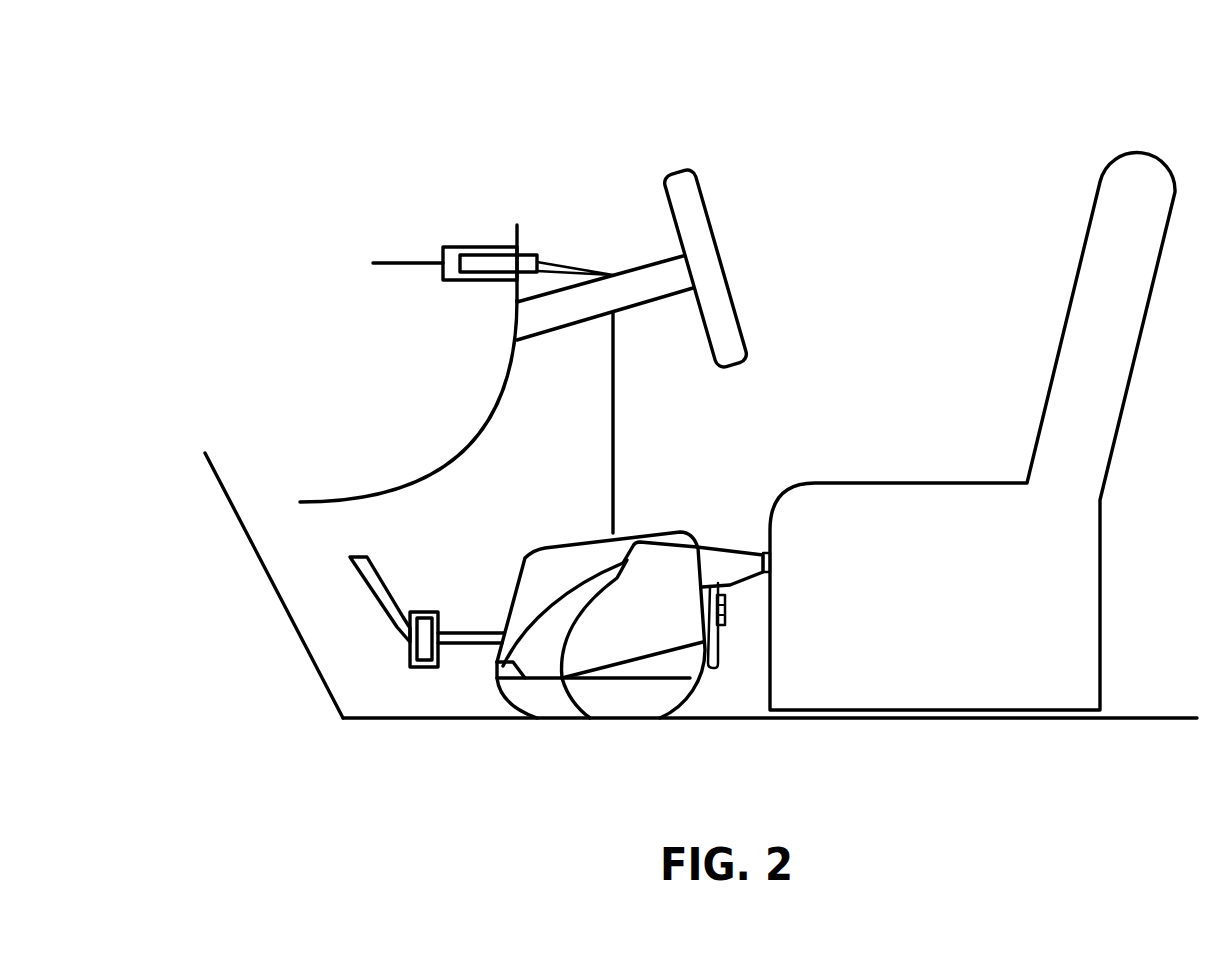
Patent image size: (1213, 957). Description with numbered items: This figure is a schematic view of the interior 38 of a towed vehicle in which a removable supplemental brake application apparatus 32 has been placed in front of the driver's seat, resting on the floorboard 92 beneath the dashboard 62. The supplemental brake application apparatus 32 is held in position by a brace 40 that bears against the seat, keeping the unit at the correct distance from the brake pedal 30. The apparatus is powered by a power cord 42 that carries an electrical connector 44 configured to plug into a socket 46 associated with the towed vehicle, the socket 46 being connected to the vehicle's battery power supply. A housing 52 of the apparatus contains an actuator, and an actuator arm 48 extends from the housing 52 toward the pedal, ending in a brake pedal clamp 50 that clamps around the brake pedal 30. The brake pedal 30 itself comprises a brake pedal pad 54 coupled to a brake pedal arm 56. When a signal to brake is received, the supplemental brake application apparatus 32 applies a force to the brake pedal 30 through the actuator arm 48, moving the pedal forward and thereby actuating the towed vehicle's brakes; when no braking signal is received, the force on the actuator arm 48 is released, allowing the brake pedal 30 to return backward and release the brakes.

The brake pedal 30 is at (362, 612).
The supplemental brake application apparatus 32 is at (690, 688).
The interior 38 is at (326, 104).
The brace 40 is at (727, 545).
The power cord 42 is at (613, 383).
The electrical connector 44 is at (535, 253).
The socket 46 is at (442, 243).
The actuator arm 48 is at (457, 647).
The brake pedal clamp 50 is at (425, 668).
The housing 52 is at (622, 707).
The brake pedal pad 54 is at (427, 627).
The brake pedal arm 56 is at (378, 583).
The dashboard 62 is at (418, 453).
The floorboard 92 is at (423, 718).